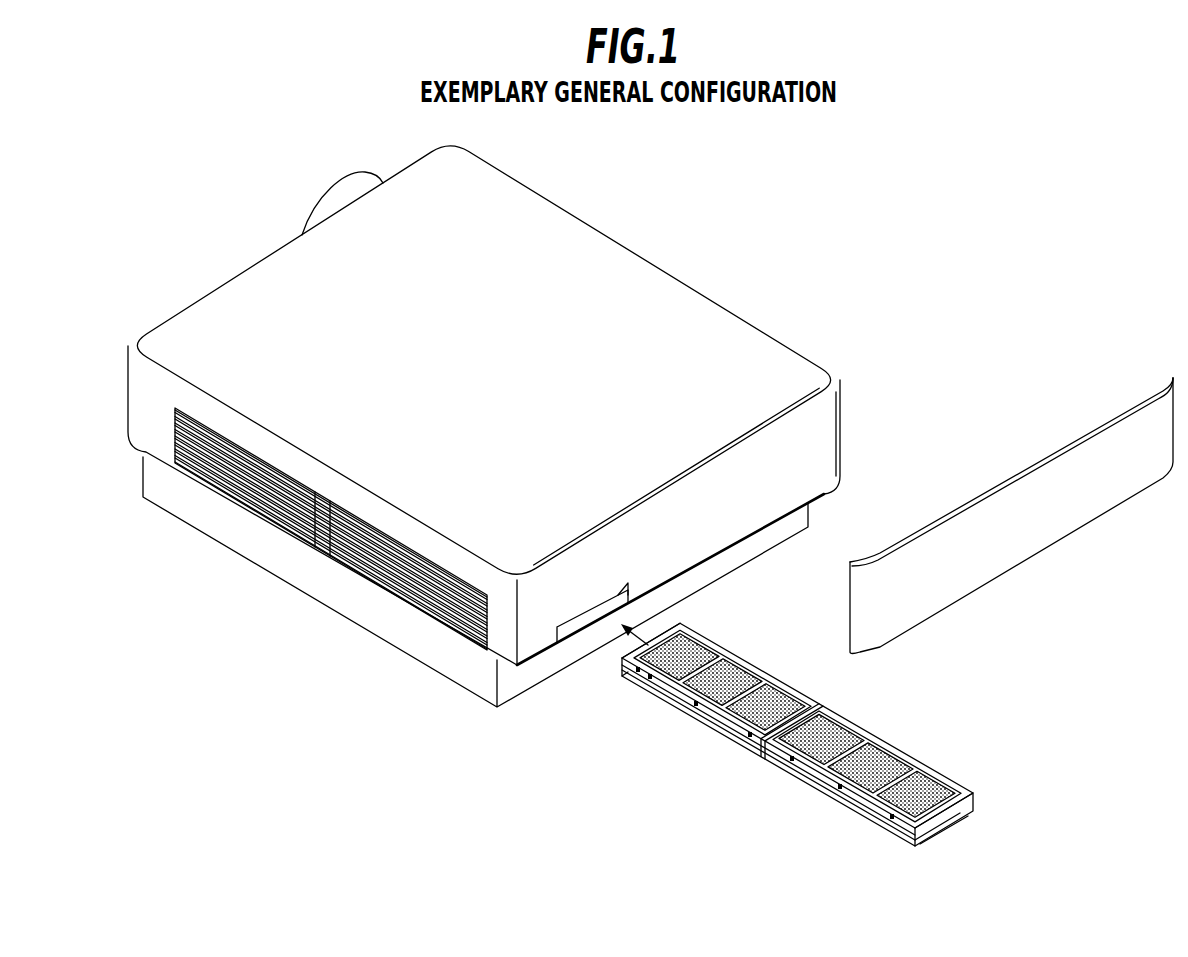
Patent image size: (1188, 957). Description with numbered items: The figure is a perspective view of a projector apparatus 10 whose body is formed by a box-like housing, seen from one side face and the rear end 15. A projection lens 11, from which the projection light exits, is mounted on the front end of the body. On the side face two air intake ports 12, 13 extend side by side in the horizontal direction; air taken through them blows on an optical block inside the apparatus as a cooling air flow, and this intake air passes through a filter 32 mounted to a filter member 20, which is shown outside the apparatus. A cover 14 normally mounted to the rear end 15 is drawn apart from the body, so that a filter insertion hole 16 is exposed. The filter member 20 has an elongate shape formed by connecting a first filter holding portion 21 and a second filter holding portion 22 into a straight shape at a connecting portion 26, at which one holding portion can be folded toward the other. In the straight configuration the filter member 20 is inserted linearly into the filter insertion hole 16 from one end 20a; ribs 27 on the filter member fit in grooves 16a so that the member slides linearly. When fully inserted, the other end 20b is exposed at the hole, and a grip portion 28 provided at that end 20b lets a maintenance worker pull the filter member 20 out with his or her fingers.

The projector apparatus 10 is at (658, 265).
The projection lens 11 is at (334, 186).
The air intake port 12 is at (272, 507).
The air intake port 13 is at (388, 575).
The cover 14 is at (983, 578).
The rear end 15 is at (705, 545).
The filter insertion hole 16 is at (565, 638).
The grooves 16a is at (630, 603).
The filter member 20 is at (703, 727).
The one end 20a is at (622, 668).
The another end 20b is at (977, 795).
The first filter holding portion 21 is at (910, 753).
The second filter holding portion 22 is at (792, 683).
The connecting portion 26 is at (822, 707).
The ribs 27 is at (802, 787).
The grip portion 28 is at (953, 823).
The filter 32 is at (727, 648).